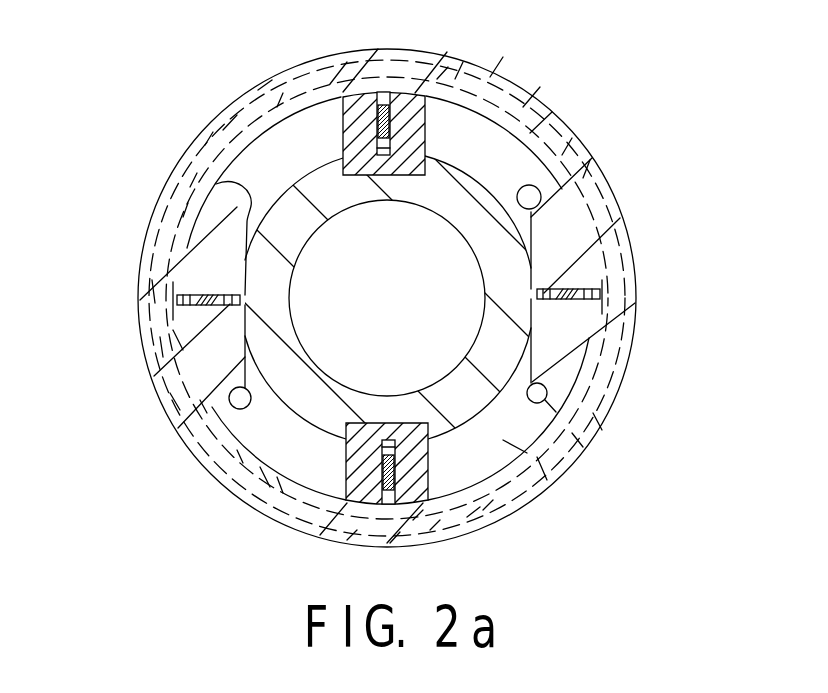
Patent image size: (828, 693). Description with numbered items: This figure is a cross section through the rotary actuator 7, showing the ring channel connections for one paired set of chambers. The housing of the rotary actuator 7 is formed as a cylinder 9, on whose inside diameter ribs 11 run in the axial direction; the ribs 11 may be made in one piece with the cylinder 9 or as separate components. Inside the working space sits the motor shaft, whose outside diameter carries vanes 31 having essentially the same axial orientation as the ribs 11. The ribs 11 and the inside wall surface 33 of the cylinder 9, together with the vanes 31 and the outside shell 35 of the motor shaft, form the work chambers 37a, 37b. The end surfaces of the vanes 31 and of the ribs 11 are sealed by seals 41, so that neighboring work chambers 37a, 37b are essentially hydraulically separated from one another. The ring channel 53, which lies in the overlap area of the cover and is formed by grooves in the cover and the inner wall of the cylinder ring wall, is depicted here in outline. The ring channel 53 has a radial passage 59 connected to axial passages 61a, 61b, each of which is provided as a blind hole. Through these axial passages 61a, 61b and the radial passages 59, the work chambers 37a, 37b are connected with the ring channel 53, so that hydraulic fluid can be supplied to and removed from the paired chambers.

The rotary actuator 7 is at (150, 545).
The cylinder 9 is at (150, 402).
The ribs 11 is at (210, 257).
The vanes 31 is at (428, 96).
The inside wall surface 33 is at (275, 142).
The outside shell 35 is at (318, 145).
The work chamber 37a is at (508, 148).
The work chamber 37b is at (252, 167).
The seals 41 is at (361, 505).
The ring channel 53 is at (143, 320).
The radial passage 59 is at (550, 209).
The axial passage 61a is at (536, 183).
The axial passage 61b is at (236, 194).